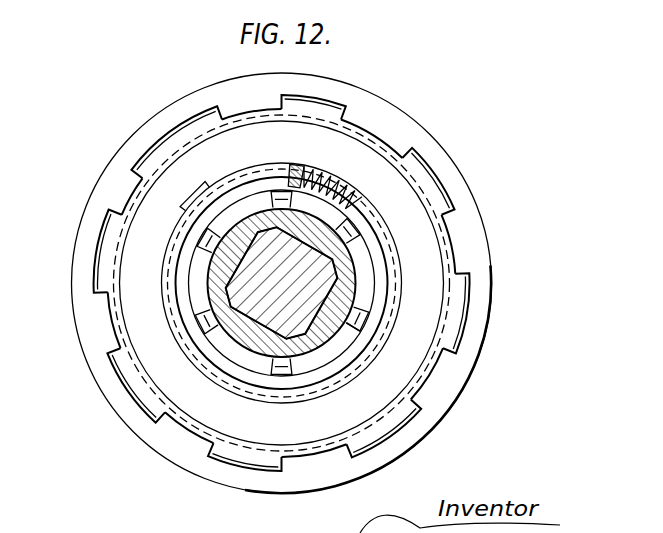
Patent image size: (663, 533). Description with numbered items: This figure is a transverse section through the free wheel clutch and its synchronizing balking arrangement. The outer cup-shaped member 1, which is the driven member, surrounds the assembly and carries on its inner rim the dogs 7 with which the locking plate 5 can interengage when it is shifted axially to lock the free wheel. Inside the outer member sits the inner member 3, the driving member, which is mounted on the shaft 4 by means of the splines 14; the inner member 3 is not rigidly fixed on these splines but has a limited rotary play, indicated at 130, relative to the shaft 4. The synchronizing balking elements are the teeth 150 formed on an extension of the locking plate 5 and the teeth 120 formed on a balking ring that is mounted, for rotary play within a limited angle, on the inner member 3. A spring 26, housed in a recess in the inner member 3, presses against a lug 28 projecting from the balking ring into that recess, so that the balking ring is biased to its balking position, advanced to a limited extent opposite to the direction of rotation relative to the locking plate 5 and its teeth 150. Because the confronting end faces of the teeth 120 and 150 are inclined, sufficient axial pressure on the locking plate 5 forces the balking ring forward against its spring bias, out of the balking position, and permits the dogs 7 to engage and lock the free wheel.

The outer cup-shaped member 1 is at (400, 107).
The inner member 3 is at (282, 283).
The shaft 4 is at (267, 315).
The locking plate 5 is at (345, 343).
The dogs 7 is at (457, 242).
The splines 14 is at (227, 282).
The spring 26 is at (333, 195).
The lug 28 is at (297, 177).
The teeth 120 is at (352, 226).
The limited play 130 is at (333, 268).
The teeth 150 is at (350, 327).